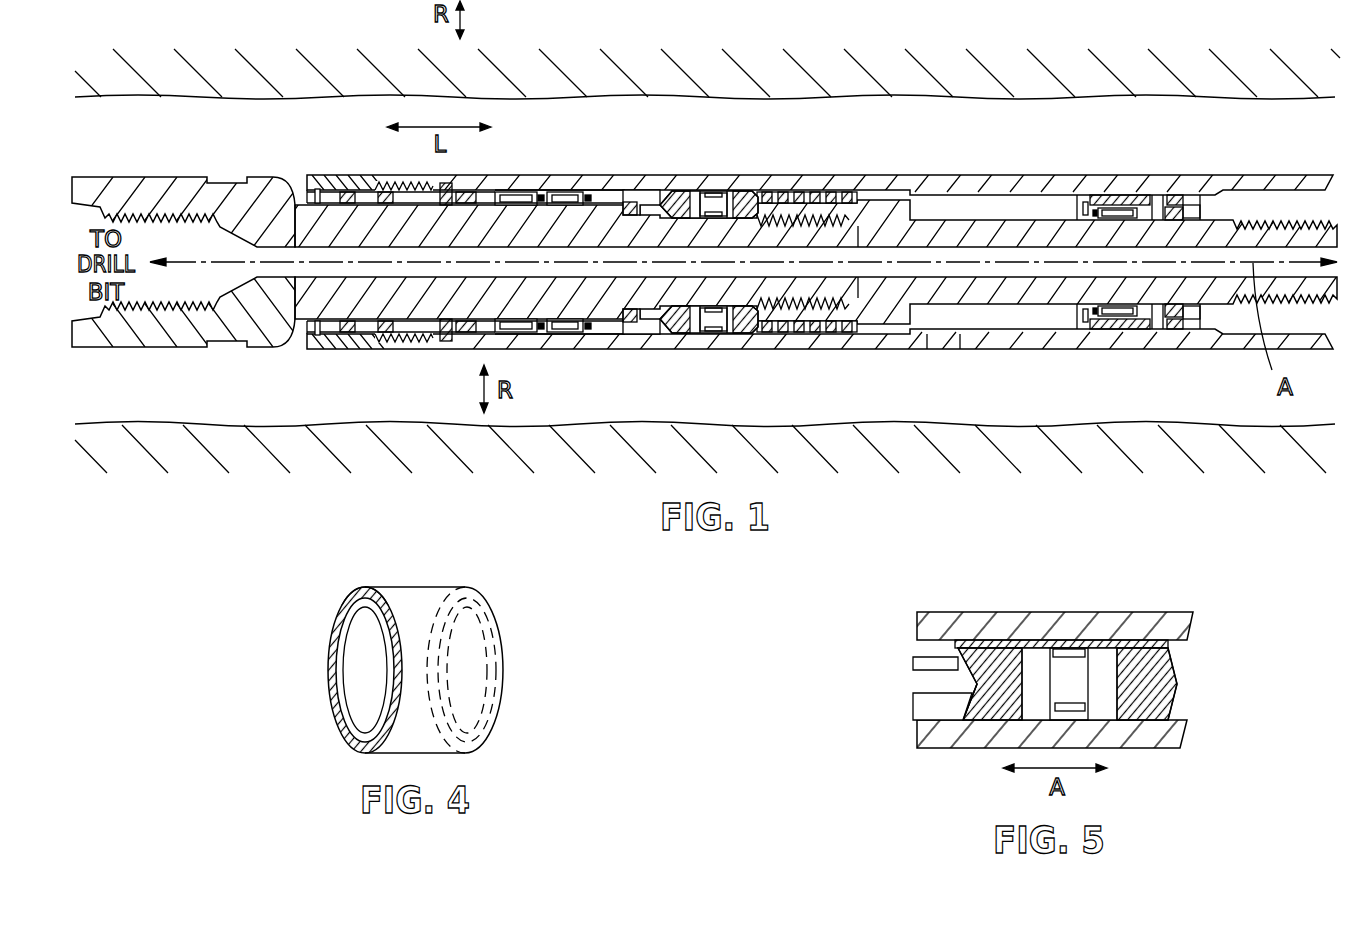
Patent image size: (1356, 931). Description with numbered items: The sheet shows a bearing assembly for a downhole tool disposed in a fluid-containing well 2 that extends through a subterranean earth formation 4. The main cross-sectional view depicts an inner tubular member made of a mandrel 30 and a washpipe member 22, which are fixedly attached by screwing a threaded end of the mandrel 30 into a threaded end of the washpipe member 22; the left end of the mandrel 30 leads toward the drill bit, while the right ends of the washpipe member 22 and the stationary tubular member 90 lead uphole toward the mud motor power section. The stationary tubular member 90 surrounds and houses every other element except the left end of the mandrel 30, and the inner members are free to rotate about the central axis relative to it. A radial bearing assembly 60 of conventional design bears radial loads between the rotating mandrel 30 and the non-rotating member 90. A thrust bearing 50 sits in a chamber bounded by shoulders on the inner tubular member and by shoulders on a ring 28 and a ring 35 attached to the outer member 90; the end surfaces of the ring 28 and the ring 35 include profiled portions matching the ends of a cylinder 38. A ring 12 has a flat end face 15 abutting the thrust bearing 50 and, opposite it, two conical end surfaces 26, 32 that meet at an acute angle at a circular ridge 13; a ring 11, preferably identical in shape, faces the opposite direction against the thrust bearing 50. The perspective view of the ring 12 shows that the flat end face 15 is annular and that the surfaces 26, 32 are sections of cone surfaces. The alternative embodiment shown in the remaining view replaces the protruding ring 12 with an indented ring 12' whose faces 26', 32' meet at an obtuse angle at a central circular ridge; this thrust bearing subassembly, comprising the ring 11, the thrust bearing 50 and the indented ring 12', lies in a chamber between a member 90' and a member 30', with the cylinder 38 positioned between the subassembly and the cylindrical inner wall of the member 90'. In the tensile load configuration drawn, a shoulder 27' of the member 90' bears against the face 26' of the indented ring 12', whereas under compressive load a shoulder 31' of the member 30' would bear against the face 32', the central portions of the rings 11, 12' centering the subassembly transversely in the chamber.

In FIG. 1, the well 2 is at (433, 112).
In FIG. 1, the subterranean earth formation 4 is at (356, 81).
In FIG. 1, the mandrel 30 is at (199, 261).
In FIG. 1, the washpipe member 22 is at (893, 205).
In FIG. 1, the ring 35 is at (765, 196).
In FIG. 1, the stationary tubular member 90 is at (831, 234).
In FIG. 1, the bearing assembly 60 is at (590, 193).
In FIG. 1, the ring 28 is at (653, 190).
In FIG. 1, the ring 12 is at (694, 254).
In FIG. 4, the ring 12 is at (434, 646).
In FIG. 1, the thrust bearing 50 is at (716, 196).
In FIG. 5, the thrust bearing 50 is at (1067, 677).
In FIG. 1, the ring 11 is at (750, 196).
In FIG. 5, the ring 11 is at (1140, 667).
In FIG. 4, the circular ridge 13 is at (370, 593).
In FIG. 4, the flat end face 15 is at (477, 613).
In FIG. 4, the end surface 32 is at (315, 670).
In FIG. 4, the end surface 26 is at (331, 670).
In FIG. 5, the indented ring 12' is at (1055, 614).
In FIG. 5, the member 90' is at (1055, 570).
In FIG. 5, the member 30' is at (1052, 759).
In FIG. 5, the cylinder 38 is at (1023, 643).
In FIG. 5, the face 26' is at (955, 636).
In FIG. 5, the shoulder 27' is at (907, 630).
In FIG. 5, the shoulder 31' is at (915, 707).
In FIG. 5, the face 32' is at (966, 734).